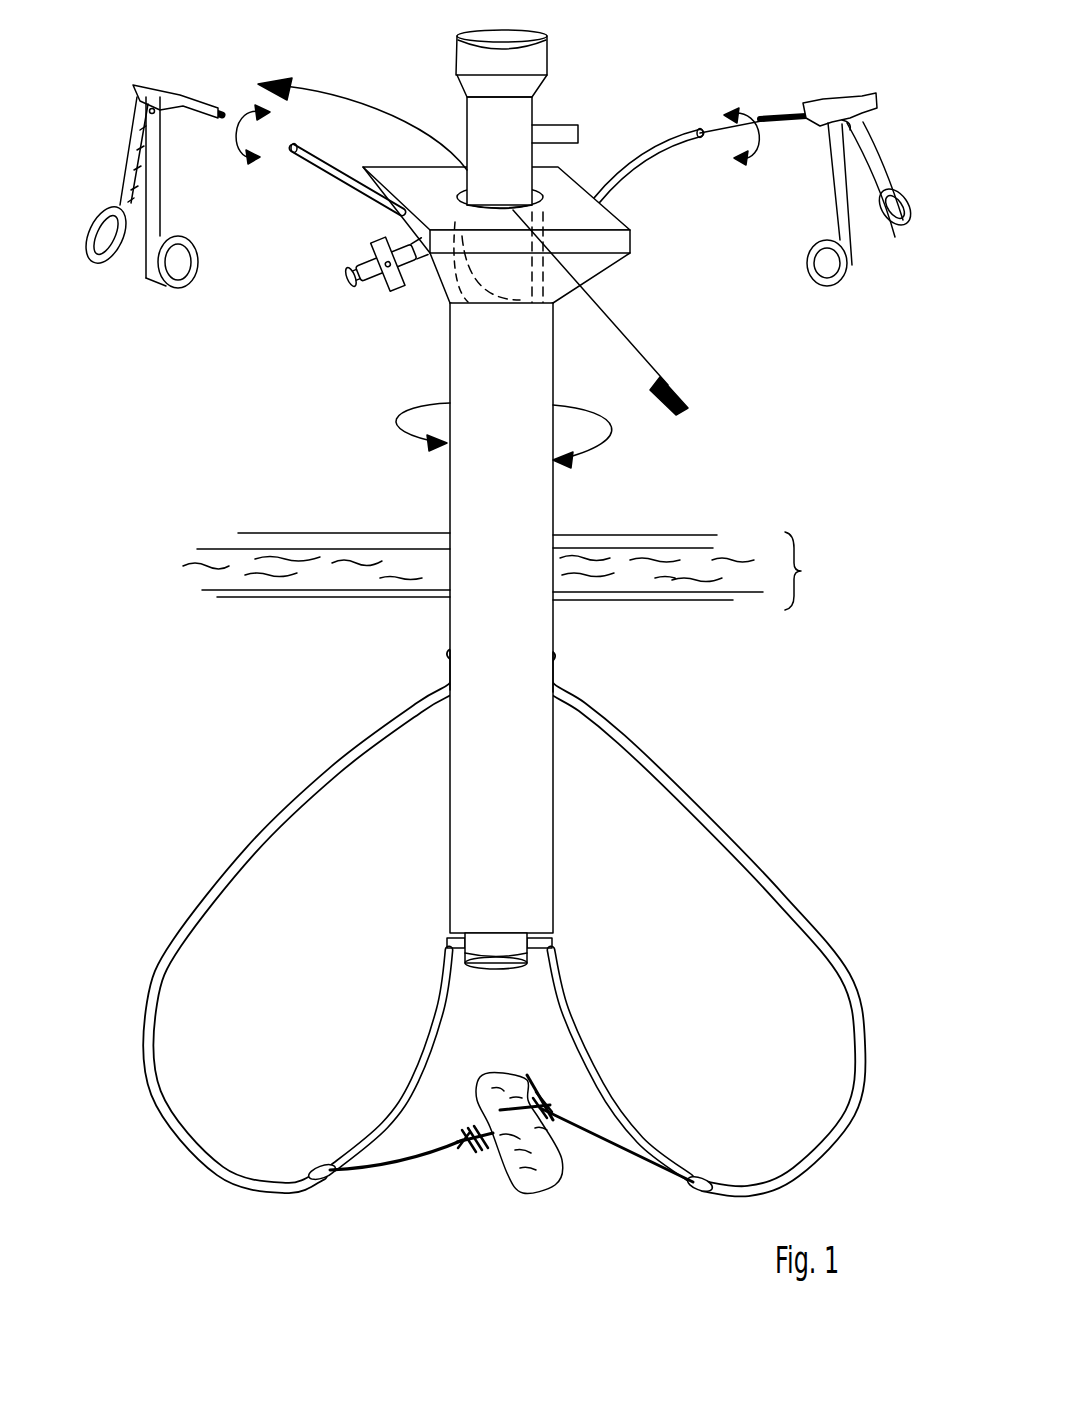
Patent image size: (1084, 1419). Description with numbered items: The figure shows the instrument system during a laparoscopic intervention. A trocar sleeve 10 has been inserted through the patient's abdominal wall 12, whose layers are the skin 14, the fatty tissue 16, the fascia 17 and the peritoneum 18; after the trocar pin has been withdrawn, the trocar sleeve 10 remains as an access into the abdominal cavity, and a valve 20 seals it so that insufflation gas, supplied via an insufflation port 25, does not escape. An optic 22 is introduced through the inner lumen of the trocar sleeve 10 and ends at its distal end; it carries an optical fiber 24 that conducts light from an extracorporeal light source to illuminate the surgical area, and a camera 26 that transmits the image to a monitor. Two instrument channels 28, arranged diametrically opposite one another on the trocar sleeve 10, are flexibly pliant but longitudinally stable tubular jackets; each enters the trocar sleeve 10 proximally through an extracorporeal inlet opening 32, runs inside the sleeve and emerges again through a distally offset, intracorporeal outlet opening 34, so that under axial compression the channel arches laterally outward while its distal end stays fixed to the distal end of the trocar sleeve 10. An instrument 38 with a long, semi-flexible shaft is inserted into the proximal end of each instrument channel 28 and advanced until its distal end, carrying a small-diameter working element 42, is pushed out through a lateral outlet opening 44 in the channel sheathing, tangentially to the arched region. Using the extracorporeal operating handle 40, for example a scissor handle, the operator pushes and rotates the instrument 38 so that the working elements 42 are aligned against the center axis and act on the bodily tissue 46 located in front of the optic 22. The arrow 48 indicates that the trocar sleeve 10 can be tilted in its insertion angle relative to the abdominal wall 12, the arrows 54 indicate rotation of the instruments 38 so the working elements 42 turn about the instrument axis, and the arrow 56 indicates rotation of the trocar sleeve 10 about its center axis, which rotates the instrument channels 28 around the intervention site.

The trocar sleeve 10 is at (503, 502).
The abdominal wall 12 is at (536, 567).
The skin 14 is at (710, 545).
The fatty tissue 16 is at (717, 565).
The fascia 17 is at (747, 593).
The peritoneum 18 is at (700, 600).
The valve 20 is at (537, 327).
The optic 22 is at (502, 160).
The optical fiber 24 is at (553, 130).
The insufflation port 25 is at (377, 280).
The camera 26 is at (500, 58).
The instrument channel 28 is at (632, 163).
The inlet opening 32 is at (350, 247).
The outlet opening 34 is at (450, 660).
The instrument 38 is at (280, 148).
The operating handle 40 is at (148, 280).
The working element 42 is at (480, 1150).
The lateral outlet opening 44 is at (317, 1182).
The bodily tissue 46 is at (513, 1197).
The arrow 48 is at (642, 340).
The arrows 54 is at (240, 110).
The arrow 56 is at (383, 418).